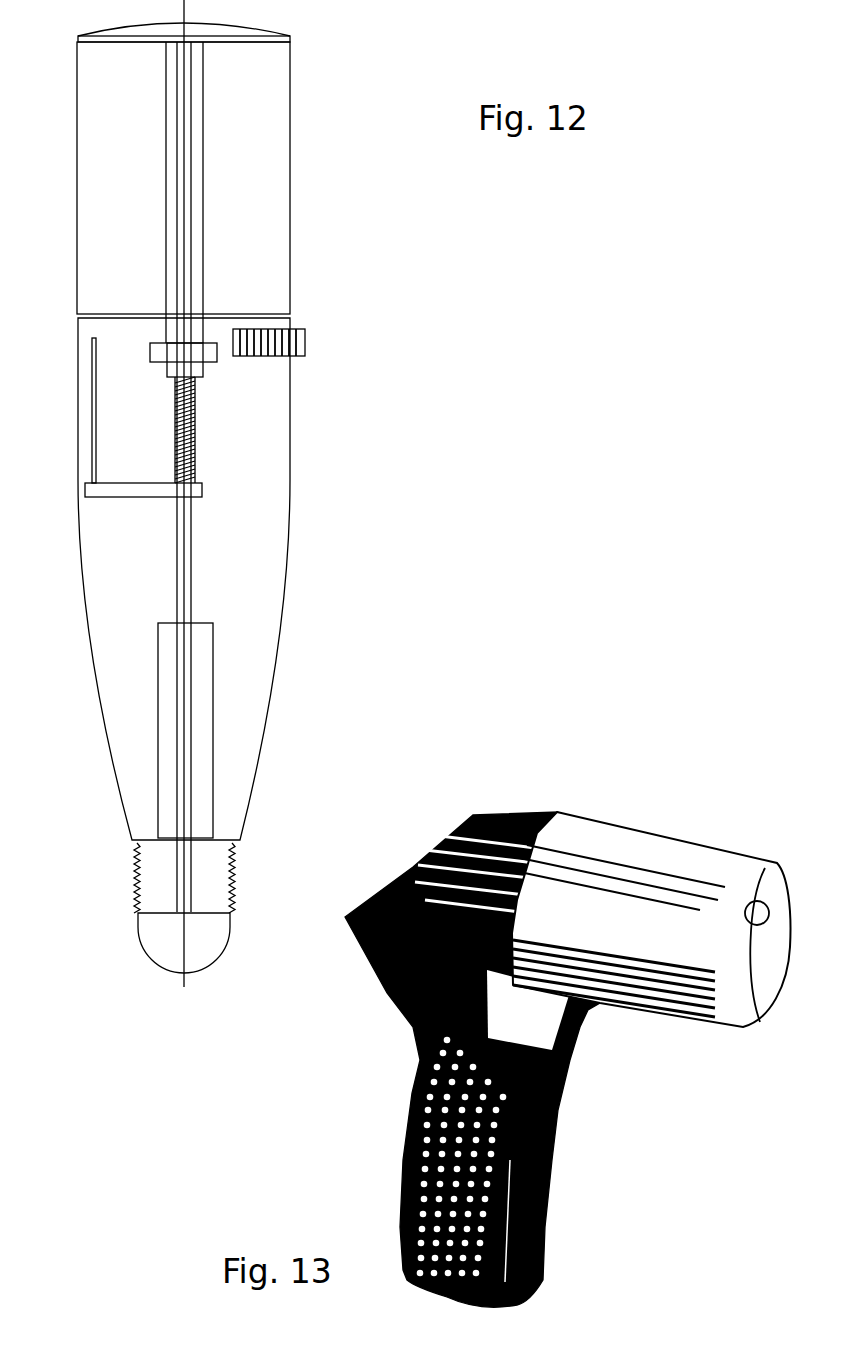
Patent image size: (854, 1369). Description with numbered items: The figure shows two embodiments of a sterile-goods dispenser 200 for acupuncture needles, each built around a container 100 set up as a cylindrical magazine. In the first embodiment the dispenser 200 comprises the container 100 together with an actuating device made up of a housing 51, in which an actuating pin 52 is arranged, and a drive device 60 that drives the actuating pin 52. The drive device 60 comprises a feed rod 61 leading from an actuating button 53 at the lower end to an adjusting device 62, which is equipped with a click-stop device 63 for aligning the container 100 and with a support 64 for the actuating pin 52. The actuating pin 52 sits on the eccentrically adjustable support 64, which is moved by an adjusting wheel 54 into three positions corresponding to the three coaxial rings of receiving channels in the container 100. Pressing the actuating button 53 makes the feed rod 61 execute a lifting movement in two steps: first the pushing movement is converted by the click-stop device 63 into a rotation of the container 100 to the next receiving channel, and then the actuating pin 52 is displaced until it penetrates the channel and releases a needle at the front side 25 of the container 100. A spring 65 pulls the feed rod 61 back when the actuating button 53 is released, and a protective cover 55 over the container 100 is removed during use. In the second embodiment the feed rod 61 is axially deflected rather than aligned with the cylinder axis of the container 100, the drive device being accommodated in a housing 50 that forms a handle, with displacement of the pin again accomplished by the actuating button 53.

In FIG. 12, the dispenser 200 is at (362, 102).
In FIG. 13, the dispenser 200 is at (762, 822).
In FIG. 12, the container 100 is at (255, 175).
In FIG. 13, the container 100 is at (643, 938).
In FIG. 12, the front side 25 is at (247, 44).
In FIG. 12, the protective cover 55 is at (138, 32).
In FIG. 12, the housing 51 is at (280, 667).
In FIG. 12, the adjusting wheel 54 is at (305, 340).
In FIG. 12, the adjusting device 62 is at (250, 394).
In FIG. 12, the click-stop device 63 is at (160, 357).
In FIG. 12, the support 64 is at (193, 443).
In FIG. 12, the drive device 60 is at (250, 504).
In FIG. 12, the actuating pin 52 is at (132, 492).
In FIG. 12, the spring 65 is at (190, 467).
In FIG. 12, the feed rod 61 is at (193, 525).
In FIG. 12, the actuating button 53 is at (200, 957).
In FIG. 13, the actuating button 53 is at (575, 1040).
In FIG. 13, the housing 50 is at (560, 1130).